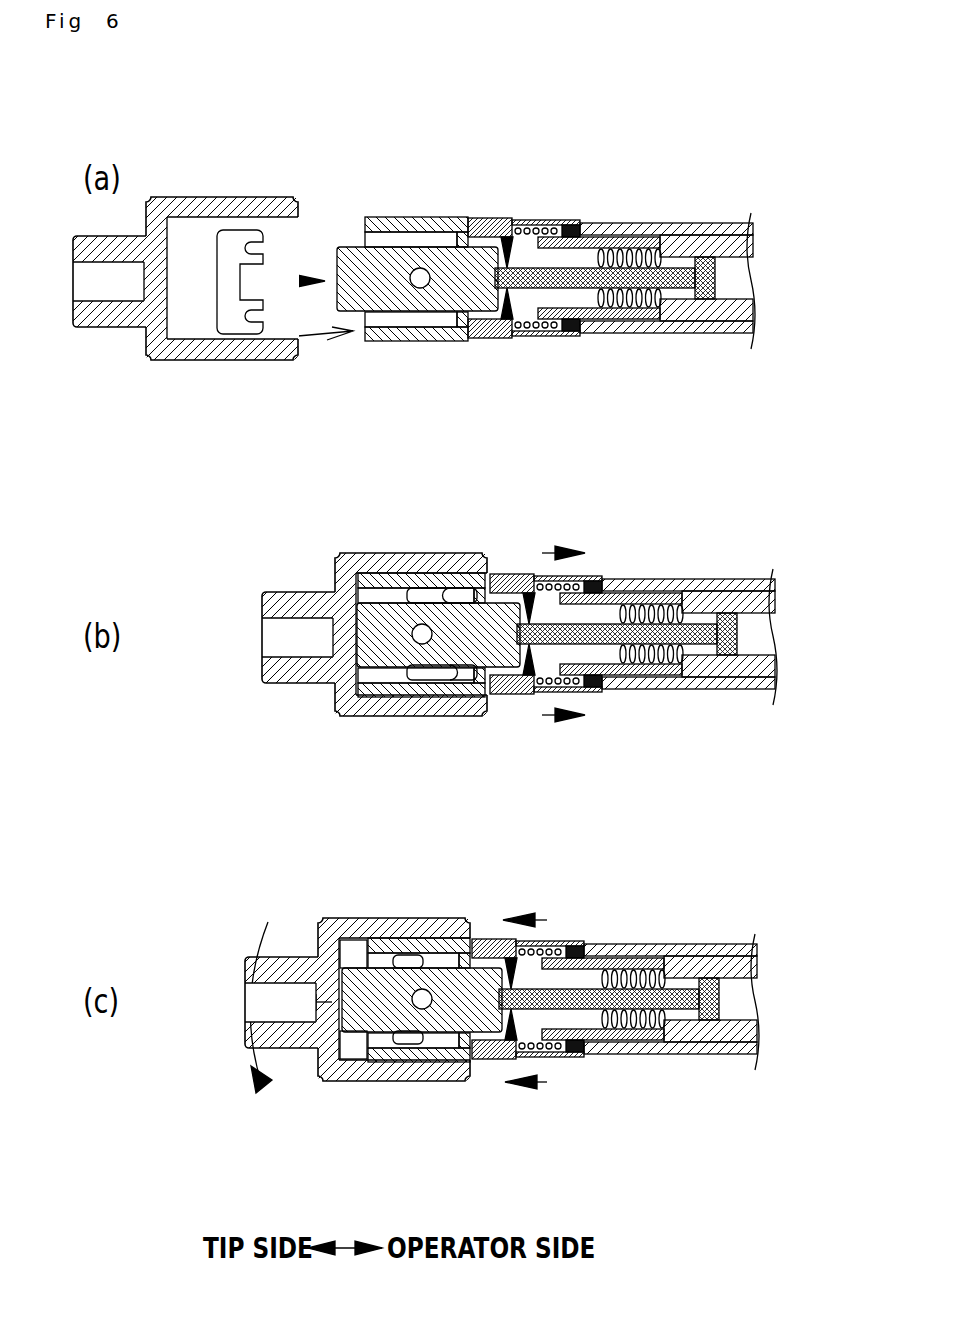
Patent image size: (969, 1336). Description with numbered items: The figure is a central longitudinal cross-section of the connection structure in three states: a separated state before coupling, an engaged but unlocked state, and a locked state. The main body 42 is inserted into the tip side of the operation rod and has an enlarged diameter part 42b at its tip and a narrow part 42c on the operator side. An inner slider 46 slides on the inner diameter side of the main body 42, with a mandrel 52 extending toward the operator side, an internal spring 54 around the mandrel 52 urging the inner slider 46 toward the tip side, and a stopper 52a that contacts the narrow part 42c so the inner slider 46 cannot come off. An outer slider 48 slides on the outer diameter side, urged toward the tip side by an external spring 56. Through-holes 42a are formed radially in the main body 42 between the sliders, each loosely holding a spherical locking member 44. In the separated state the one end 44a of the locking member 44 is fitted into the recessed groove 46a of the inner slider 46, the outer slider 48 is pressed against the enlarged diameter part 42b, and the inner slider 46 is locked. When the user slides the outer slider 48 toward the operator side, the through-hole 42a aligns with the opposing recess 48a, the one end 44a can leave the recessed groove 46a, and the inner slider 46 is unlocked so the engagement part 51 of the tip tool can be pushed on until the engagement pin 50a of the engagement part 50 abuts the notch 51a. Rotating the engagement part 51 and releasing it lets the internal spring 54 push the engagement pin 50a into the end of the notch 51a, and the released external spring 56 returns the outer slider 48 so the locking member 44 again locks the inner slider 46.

The main body 42 is at (323, 1080).
The through-hole 42a is at (497, 339).
The enlarged diameter part 42b is at (398, 341).
The narrow part 42c is at (703, 237).
The locking member 44 is at (513, 220).
The one end 44a is at (558, 220).
The inner slider 46 is at (357, 247).
The recessed groove 46a is at (487, 220).
The outer slider 48 is at (582, 334).
The opposing recess 48a is at (450, 341).
The engagement part 50 is at (293, 342).
The engagement pin 50a is at (419, 289).
The engagement part 51 is at (223, 198).
The notch 51a is at (277, 272).
The mandrel 52 is at (653, 227).
The stopper 52a is at (718, 333).
The internal spring 54 is at (633, 947).
The external spring 56 is at (547, 337).